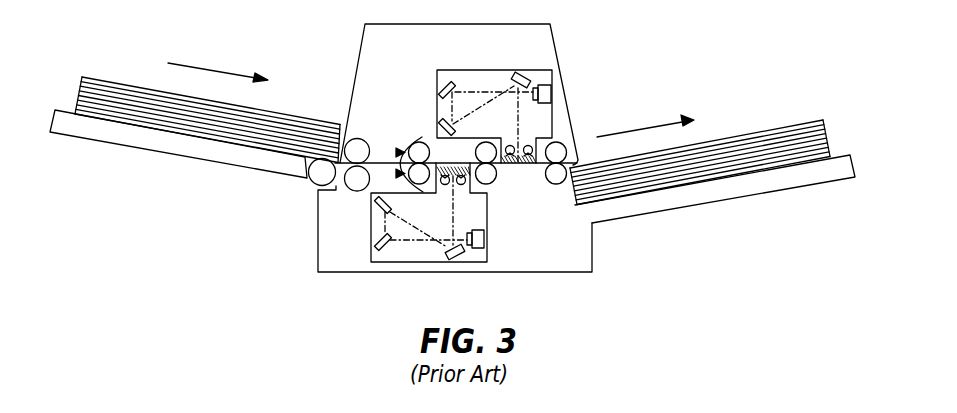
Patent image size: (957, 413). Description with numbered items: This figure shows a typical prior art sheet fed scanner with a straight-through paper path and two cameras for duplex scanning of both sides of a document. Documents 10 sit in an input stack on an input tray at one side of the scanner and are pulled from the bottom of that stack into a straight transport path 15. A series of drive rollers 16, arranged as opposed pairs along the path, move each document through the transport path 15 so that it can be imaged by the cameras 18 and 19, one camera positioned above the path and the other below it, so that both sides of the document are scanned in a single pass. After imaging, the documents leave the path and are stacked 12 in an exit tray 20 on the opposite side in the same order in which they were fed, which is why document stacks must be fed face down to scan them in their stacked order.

The documents 10 is at (115, 80).
The stacked documents 12 is at (770, 129).
The straight transport path 15 is at (380, 163).
The drive rollers 16 is at (497, 183).
The camera 18 is at (437, 78).
The camera 19 is at (486, 240).
The exit tray 20 is at (702, 203).